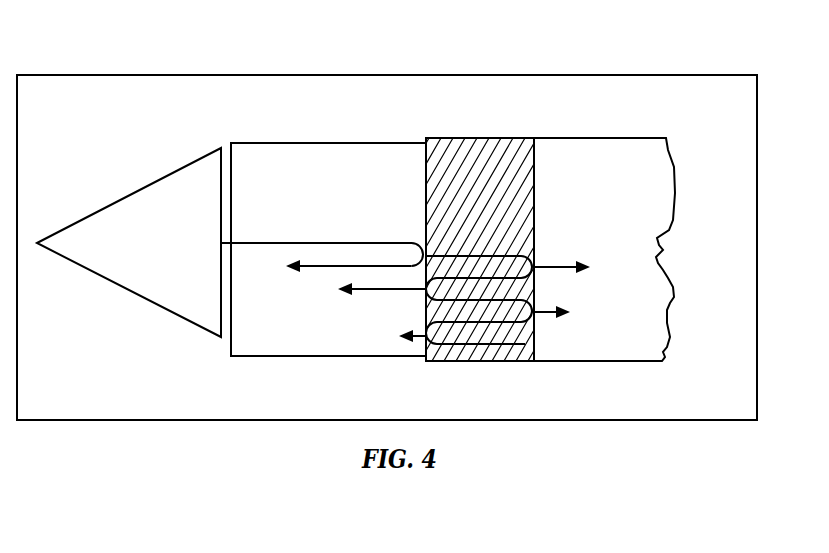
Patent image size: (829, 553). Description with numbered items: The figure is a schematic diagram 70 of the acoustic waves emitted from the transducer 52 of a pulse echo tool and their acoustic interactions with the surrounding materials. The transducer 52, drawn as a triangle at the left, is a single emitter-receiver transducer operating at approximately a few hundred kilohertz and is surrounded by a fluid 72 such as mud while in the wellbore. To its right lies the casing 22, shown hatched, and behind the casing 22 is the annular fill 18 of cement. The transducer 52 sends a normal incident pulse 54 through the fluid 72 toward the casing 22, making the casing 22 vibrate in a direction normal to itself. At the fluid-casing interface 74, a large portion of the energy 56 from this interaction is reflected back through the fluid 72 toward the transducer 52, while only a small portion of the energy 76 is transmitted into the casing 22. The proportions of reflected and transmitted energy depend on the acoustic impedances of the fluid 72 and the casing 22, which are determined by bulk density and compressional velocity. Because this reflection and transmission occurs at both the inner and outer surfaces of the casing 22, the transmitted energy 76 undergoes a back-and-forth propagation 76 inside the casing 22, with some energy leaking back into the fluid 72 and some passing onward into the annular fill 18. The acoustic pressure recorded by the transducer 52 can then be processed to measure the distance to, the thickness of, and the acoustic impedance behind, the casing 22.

The schematic diagram 70 is at (88, 31).
The transducer 52 is at (173, 172).
The normal incident pulse 54 is at (339, 243).
The reflected energy 56 is at (352, 266).
The fluid 72 is at (325, 396).
The casing 22 is at (478, 397).
The annular fill 18 is at (603, 397).
The fluid-casing interface 74 is at (425, 139).
The transmitted energy 76 is at (430, 363).